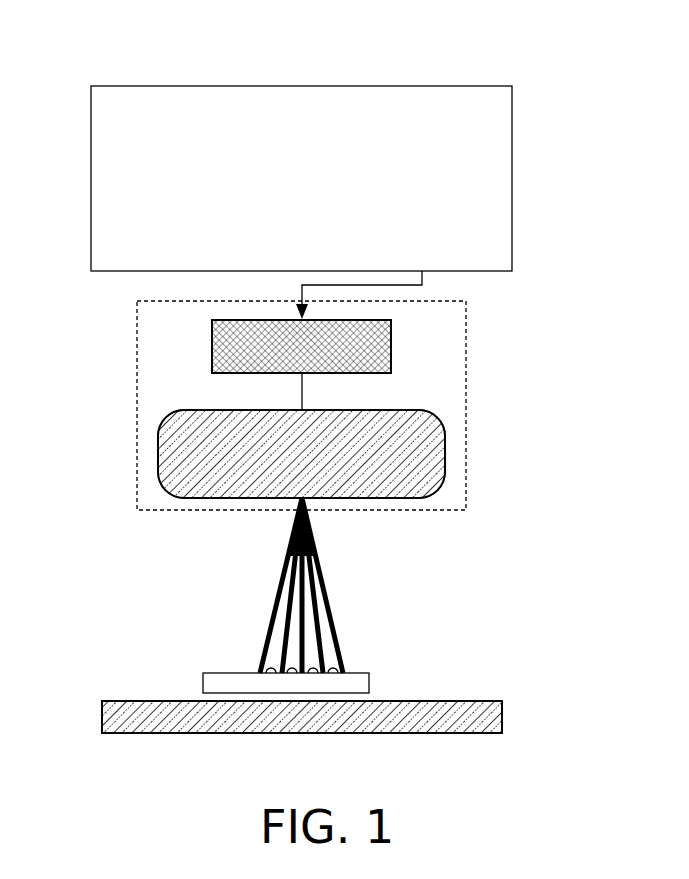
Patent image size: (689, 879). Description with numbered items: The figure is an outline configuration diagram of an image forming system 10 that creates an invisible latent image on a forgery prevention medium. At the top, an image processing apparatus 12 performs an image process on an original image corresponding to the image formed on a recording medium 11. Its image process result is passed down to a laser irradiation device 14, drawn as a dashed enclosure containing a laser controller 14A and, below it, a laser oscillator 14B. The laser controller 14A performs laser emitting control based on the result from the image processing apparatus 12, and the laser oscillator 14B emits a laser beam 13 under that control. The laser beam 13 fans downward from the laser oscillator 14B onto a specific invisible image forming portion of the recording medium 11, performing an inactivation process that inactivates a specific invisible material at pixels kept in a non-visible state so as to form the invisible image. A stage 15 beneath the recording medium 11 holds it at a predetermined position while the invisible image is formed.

The image forming system 10 is at (290, 52).
The recording medium 11 is at (360, 672).
The image processing apparatus 12 is at (512, 175).
The laser beam 13 is at (278, 578).
The laser irradiation device 14 is at (467, 397).
The laser controller 14A is at (222, 344).
The laser oscillator 14B is at (175, 452).
The stage 15 is at (135, 702).